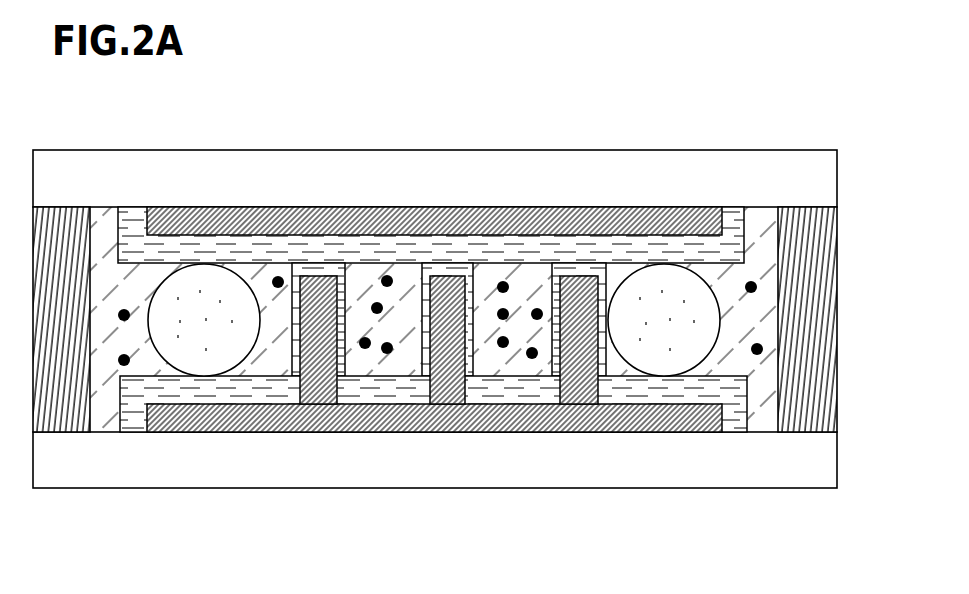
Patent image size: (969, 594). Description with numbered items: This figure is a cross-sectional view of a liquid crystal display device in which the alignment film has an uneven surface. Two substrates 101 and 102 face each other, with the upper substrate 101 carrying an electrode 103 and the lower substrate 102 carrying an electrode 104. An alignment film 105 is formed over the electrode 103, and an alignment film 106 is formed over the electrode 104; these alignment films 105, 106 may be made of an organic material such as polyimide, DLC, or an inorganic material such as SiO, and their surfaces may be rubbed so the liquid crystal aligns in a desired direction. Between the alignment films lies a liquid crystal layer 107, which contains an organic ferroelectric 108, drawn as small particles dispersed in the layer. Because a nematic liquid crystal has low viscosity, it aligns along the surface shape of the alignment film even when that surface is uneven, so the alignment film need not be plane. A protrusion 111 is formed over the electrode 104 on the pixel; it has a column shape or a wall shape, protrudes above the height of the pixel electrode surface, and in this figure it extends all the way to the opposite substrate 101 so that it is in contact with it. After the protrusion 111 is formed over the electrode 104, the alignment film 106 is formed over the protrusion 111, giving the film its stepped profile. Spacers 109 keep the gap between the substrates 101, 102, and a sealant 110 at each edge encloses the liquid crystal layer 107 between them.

The substrate 101 is at (277, 172).
The substrate 102 is at (235, 468).
The electrode 103 is at (297, 220).
The electrode 104 is at (298, 425).
The alignment film 105 is at (425, 250).
The alignment film 106 is at (382, 393).
The liquid crystal layer 107 is at (527, 288).
The organic ferroelectric 108 is at (751, 287).
The spacer 109 is at (198, 320).
The sealant 110 is at (50, 400).
The protrusion 111 is at (570, 372).